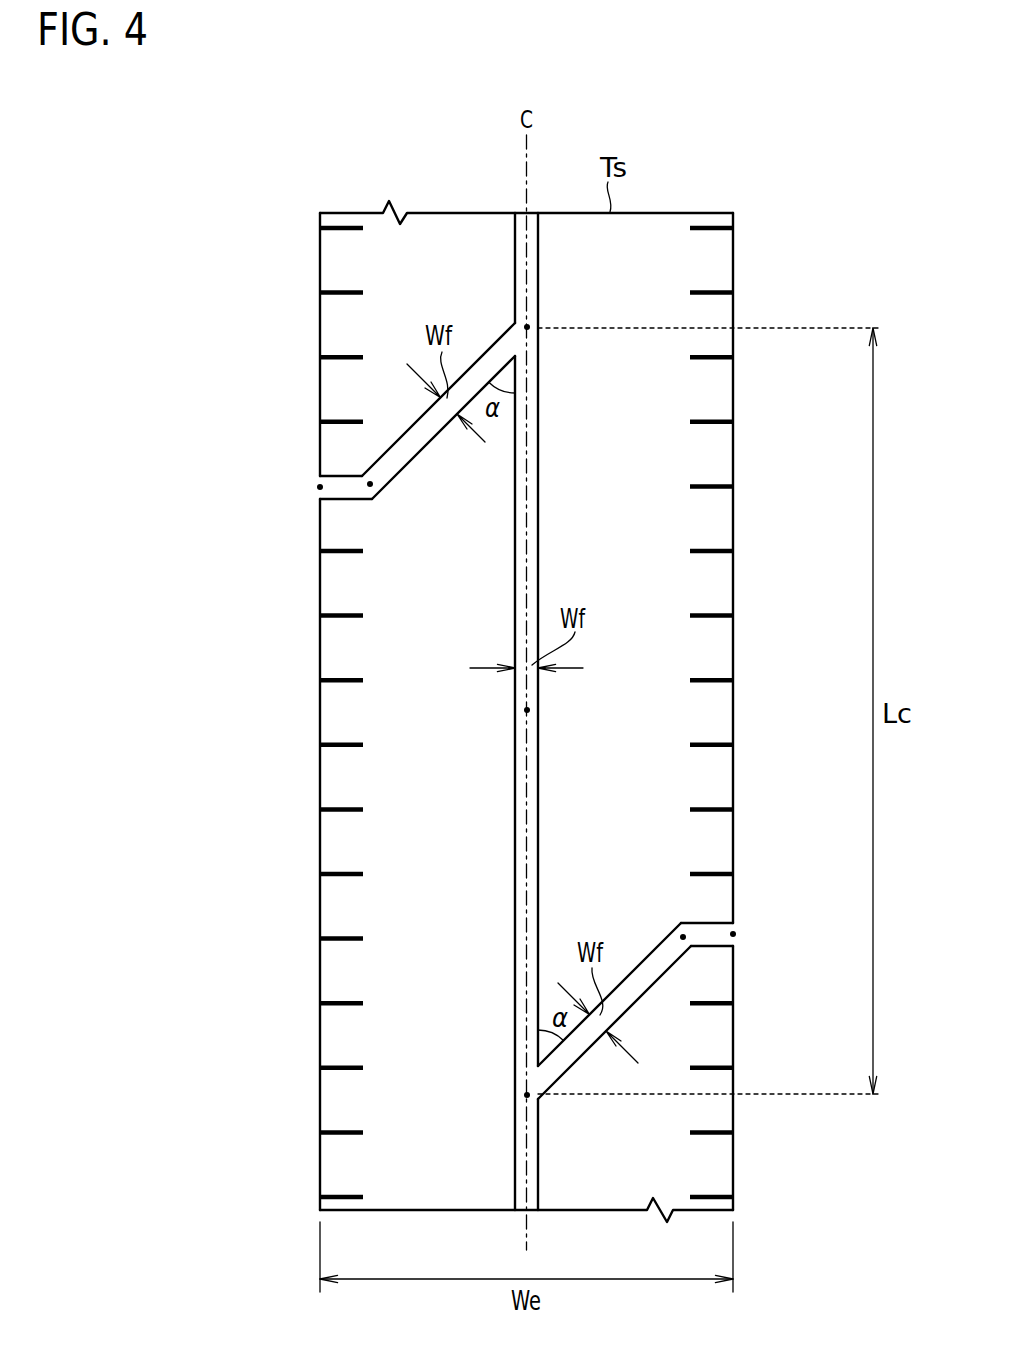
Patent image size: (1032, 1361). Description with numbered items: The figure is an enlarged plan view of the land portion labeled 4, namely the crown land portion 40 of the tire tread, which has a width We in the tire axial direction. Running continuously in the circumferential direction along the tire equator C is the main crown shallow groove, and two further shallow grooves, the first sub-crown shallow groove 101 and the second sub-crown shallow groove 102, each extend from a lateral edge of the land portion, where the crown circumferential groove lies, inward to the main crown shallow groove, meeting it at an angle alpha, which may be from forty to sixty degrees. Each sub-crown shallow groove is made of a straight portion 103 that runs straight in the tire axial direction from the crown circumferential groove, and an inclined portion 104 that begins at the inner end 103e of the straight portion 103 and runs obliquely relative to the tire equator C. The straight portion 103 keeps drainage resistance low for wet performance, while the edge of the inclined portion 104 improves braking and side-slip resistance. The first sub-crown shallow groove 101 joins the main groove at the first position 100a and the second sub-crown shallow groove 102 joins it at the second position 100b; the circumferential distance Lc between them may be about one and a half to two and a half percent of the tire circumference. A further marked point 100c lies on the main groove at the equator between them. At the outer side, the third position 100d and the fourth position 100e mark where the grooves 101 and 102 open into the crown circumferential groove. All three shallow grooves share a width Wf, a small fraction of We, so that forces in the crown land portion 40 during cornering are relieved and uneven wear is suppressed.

The electrode 4 is at (526, 672).
The crown land portion 40 is at (437, 212).
The first position 100a is at (527, 327).
The second position 100b is at (527, 1095).
The center point of slit 100c is at (527, 710).
The third position 100d is at (320, 487).
The fourth position 100e is at (733, 934).
The first sub-crown shallow groove 101 is at (306, 447).
The second sub-crown shallow groove 102 is at (748, 974).
The straight portion 103 is at (527, 688).
The inner end of the straight portion 103e is at (370, 484).
The inclined portion 104 is at (485, 352).